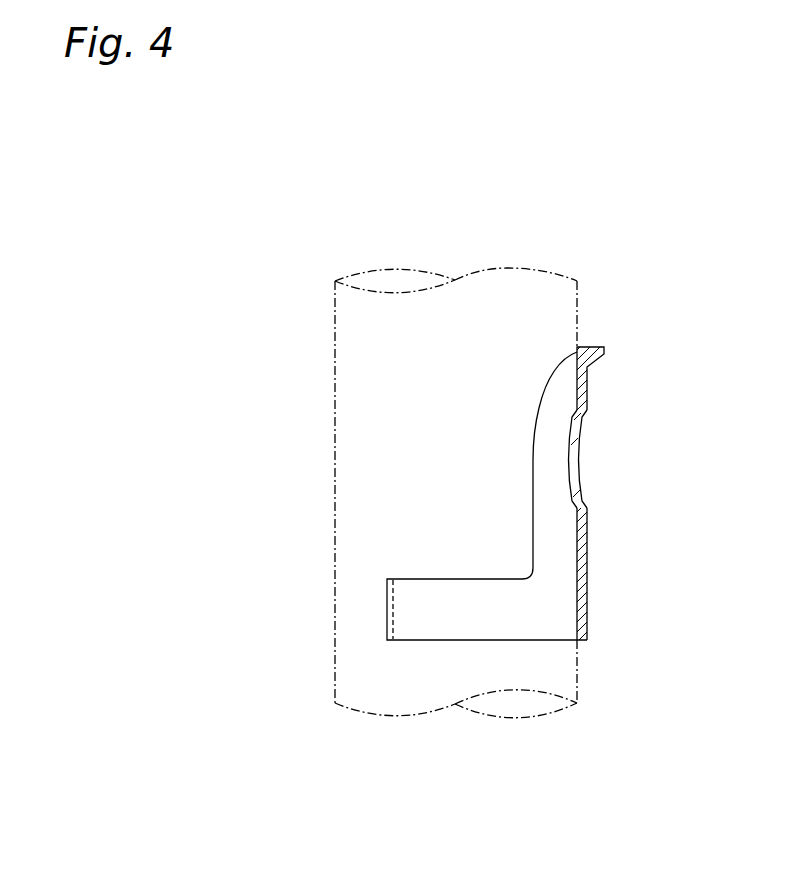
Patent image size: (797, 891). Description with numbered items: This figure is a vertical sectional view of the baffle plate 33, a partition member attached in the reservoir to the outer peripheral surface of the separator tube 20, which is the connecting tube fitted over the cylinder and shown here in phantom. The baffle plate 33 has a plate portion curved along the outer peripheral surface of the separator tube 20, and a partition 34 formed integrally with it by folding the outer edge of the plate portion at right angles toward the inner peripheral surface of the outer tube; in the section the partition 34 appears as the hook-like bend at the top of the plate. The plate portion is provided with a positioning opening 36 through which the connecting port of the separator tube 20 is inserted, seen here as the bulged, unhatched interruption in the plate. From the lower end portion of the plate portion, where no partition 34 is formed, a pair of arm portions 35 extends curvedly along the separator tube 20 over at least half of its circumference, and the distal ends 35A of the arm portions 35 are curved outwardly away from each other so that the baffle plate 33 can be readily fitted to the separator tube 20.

The separator tube 20 is at (511, 263).
The baffle plate 33 is at (468, 509).
The partition 34 is at (588, 346).
The arm portions 35 is at (404, 671).
The distal ends of the arm portions 35A is at (387, 609).
The positioning opening 36 is at (578, 478).